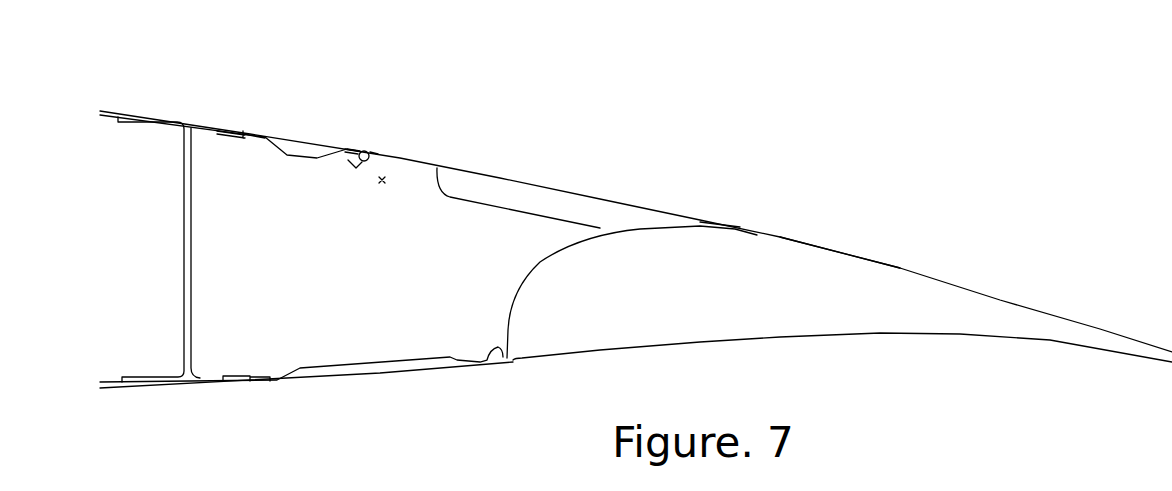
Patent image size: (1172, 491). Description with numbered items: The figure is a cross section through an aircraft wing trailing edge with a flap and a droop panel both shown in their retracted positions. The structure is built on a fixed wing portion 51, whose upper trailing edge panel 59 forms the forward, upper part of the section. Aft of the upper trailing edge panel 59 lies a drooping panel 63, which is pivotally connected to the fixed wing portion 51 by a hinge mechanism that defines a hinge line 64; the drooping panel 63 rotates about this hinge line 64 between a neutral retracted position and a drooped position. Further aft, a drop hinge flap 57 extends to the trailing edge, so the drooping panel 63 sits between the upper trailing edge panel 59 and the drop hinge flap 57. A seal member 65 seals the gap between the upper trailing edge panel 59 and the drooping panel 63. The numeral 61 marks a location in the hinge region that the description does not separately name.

The fixed wing portion 51 is at (203, 108).
The drop hinge flap 57 is at (823, 258).
The upper trailing edge panel 59 is at (305, 147).
The hinge pin location 61 is at (353, 172).
The drooping panel 63 is at (522, 195).
The hinge line 64 is at (386, 186).
The seal member 65 is at (368, 152).